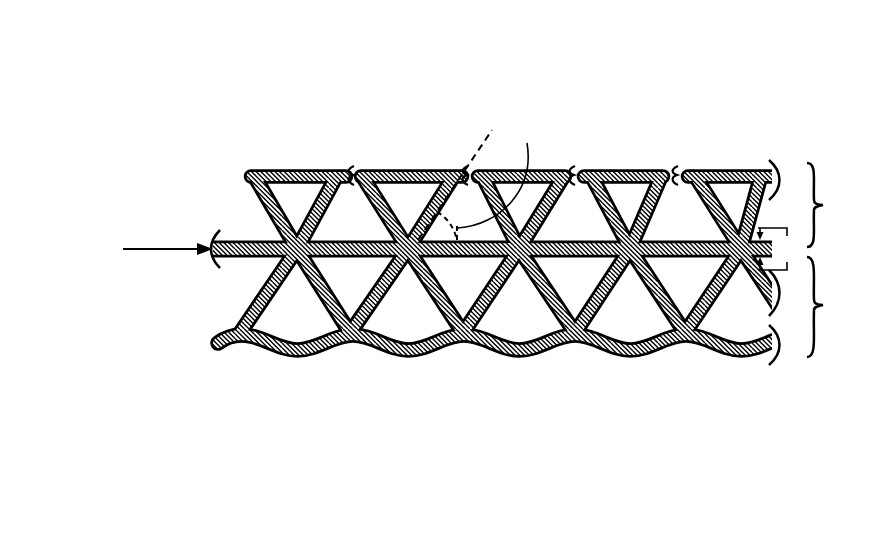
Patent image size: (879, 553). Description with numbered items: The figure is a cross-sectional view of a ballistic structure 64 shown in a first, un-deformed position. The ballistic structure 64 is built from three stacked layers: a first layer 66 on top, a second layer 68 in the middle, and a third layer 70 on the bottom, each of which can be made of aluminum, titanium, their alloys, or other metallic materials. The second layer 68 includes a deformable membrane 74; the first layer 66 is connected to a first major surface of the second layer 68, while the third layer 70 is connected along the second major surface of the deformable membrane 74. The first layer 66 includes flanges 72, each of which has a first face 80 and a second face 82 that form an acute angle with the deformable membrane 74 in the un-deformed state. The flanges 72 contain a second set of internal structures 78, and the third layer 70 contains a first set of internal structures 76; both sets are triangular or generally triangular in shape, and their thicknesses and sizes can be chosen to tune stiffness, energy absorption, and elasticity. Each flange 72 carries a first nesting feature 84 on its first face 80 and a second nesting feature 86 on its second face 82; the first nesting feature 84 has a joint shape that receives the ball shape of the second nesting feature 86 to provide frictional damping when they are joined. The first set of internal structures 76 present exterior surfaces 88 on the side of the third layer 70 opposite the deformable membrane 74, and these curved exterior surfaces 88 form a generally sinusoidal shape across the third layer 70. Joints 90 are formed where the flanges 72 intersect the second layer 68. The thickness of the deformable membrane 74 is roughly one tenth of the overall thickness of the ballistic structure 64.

The ballistic structure 64 is at (287, 116).
The first layer 66 is at (832, 205).
The second layer 68 is at (150, 249).
The third layer 70 is at (832, 307).
The flanges 72 is at (625, 168).
The deformable membrane 74 is at (258, 241).
The first set of internal structures 76 is at (273, 281).
The second set of internal structures 78 is at (255, 205).
The first face 80 is at (463, 178).
The second face 82 is at (373, 208).
The first nesting feature 84 is at (675, 170).
The second nesting feature 86 is at (692, 170).
The exterior surfaces 88 is at (292, 358).
The joints 90 is at (411, 262).